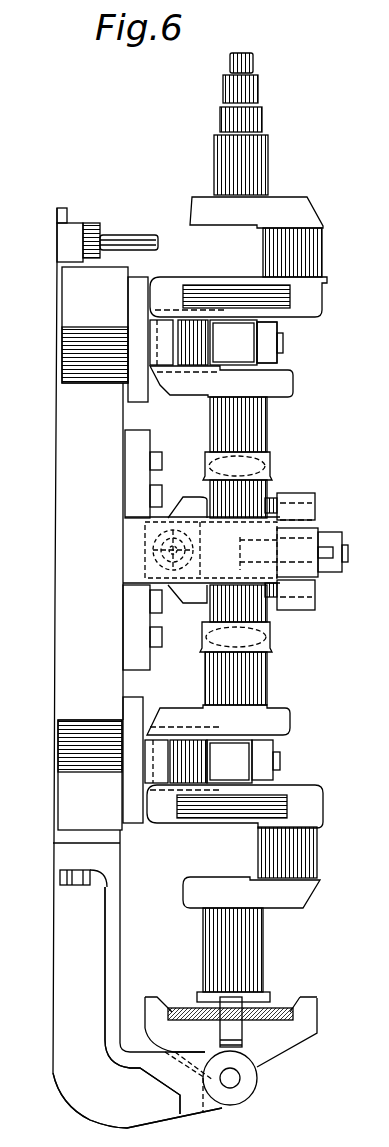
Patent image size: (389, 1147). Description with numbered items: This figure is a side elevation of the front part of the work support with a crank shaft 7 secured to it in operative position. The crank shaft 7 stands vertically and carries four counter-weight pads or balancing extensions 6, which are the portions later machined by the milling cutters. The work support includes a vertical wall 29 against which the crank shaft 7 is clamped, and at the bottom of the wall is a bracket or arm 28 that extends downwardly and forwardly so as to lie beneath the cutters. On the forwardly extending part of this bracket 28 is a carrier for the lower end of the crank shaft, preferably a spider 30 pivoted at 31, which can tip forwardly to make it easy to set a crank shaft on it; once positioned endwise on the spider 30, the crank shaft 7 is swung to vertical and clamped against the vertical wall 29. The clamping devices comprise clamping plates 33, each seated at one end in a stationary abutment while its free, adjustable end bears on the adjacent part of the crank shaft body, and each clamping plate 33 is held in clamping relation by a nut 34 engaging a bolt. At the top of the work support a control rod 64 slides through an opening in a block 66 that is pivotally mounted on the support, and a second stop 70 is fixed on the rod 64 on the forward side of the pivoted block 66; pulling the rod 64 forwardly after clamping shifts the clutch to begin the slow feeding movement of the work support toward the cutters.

The crank shaft 7 is at (270, 152).
The block 66 is at (73, 225).
The second stop 70 is at (93, 225).
The rod 64 is at (130, 237).
The vertical wall 29 is at (105, 334).
The counter-weight pads 6 is at (207, 297).
The clamping plates 33 is at (303, 537).
The nut 34 is at (285, 358).
The bracket or arm 28 is at (130, 938).
The spider 30 is at (305, 1023).
The pivot 31 is at (233, 1075).